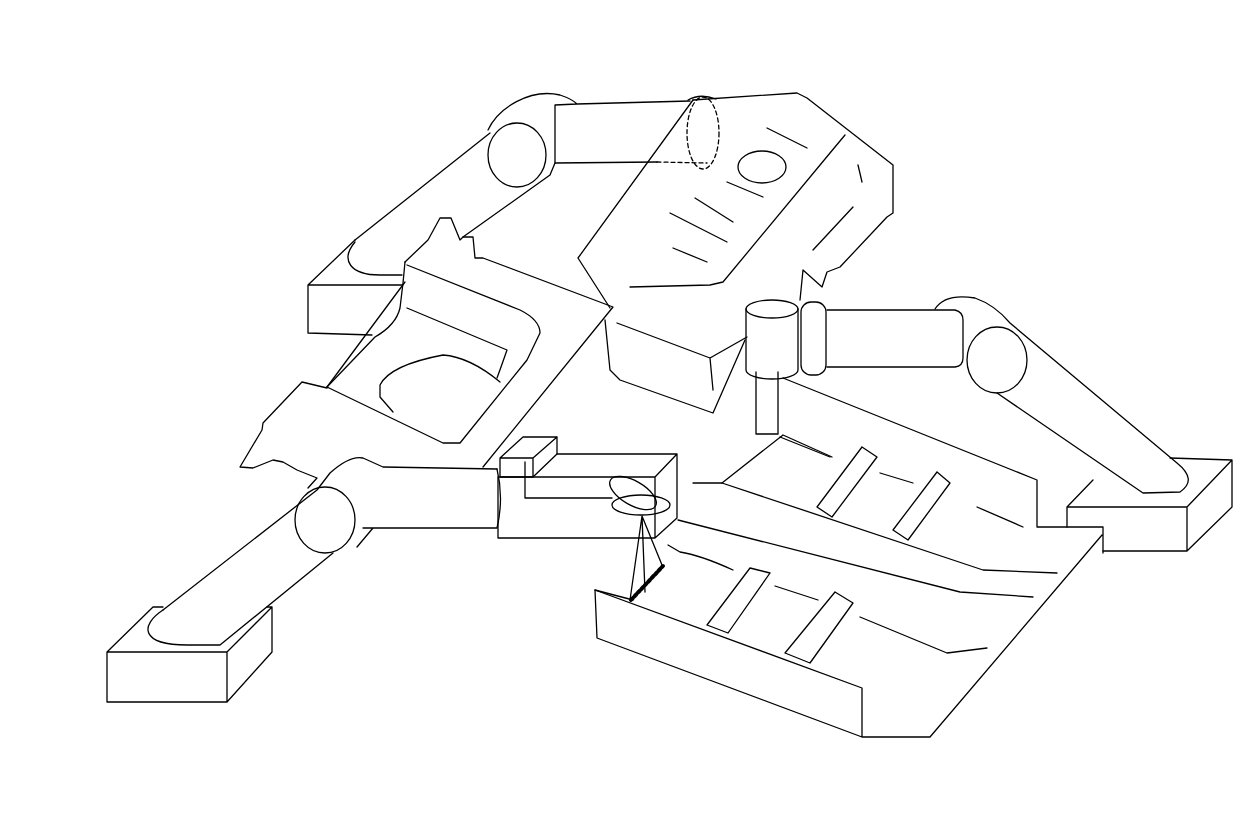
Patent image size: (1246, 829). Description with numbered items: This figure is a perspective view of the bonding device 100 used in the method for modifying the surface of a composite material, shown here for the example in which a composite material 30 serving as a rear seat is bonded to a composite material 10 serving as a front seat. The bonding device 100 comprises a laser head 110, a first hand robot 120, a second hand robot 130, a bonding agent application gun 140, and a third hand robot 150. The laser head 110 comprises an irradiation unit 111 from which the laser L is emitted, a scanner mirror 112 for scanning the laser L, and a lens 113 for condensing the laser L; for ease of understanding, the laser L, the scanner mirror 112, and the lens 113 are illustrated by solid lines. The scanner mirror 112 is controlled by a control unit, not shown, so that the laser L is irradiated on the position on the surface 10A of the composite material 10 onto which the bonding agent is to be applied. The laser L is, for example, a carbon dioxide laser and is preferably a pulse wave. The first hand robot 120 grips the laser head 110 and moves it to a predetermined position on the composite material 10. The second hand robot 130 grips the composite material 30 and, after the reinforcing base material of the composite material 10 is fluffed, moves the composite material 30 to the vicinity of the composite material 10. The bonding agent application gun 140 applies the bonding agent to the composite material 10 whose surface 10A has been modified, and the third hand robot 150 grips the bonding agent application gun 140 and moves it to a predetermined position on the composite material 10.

The bonding device 100 is at (233, 141).
The composite material 10 is at (849, 557).
The surface 10A is at (647, 600).
The composite material 30 is at (830, 130).
The laser head 110 is at (594, 503).
The irradiation unit 111 is at (540, 443).
The scanner mirror 112 is at (623, 480).
The lens 113 is at (657, 503).
The first hand robot 120 is at (367, 548).
The second hand robot 130 is at (575, 90).
The bonding agent application gun 140 is at (818, 340).
The third hand robot 150 is at (989, 407).
The laser L is at (640, 567).